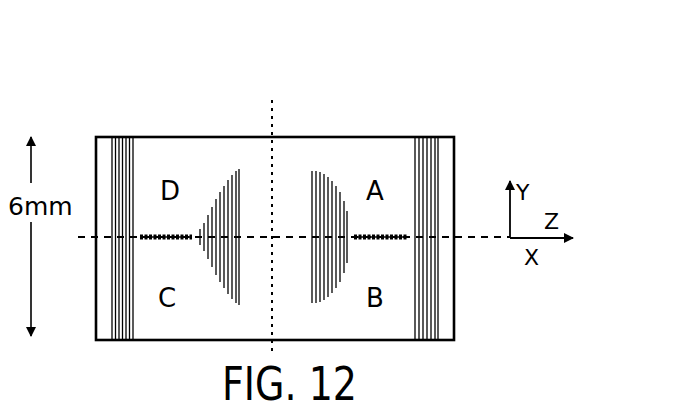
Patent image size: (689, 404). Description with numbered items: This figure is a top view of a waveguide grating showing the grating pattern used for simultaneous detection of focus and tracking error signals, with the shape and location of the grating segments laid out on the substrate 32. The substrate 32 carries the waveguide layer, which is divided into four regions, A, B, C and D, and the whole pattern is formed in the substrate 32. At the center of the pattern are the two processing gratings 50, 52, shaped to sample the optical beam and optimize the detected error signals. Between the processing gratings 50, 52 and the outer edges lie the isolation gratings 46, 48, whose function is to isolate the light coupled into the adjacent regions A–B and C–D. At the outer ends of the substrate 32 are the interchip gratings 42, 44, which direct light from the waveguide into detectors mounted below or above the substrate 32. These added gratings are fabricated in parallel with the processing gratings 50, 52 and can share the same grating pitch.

The substrate 32 is at (454, 318).
The interchip grating 42 is at (121, 136).
The interchip grating 44 is at (428, 137).
The isolation grating 46 is at (180, 236).
The isolation grating 48 is at (399, 235).
The processing grating 50 is at (222, 177).
The processing grating 52 is at (313, 178).